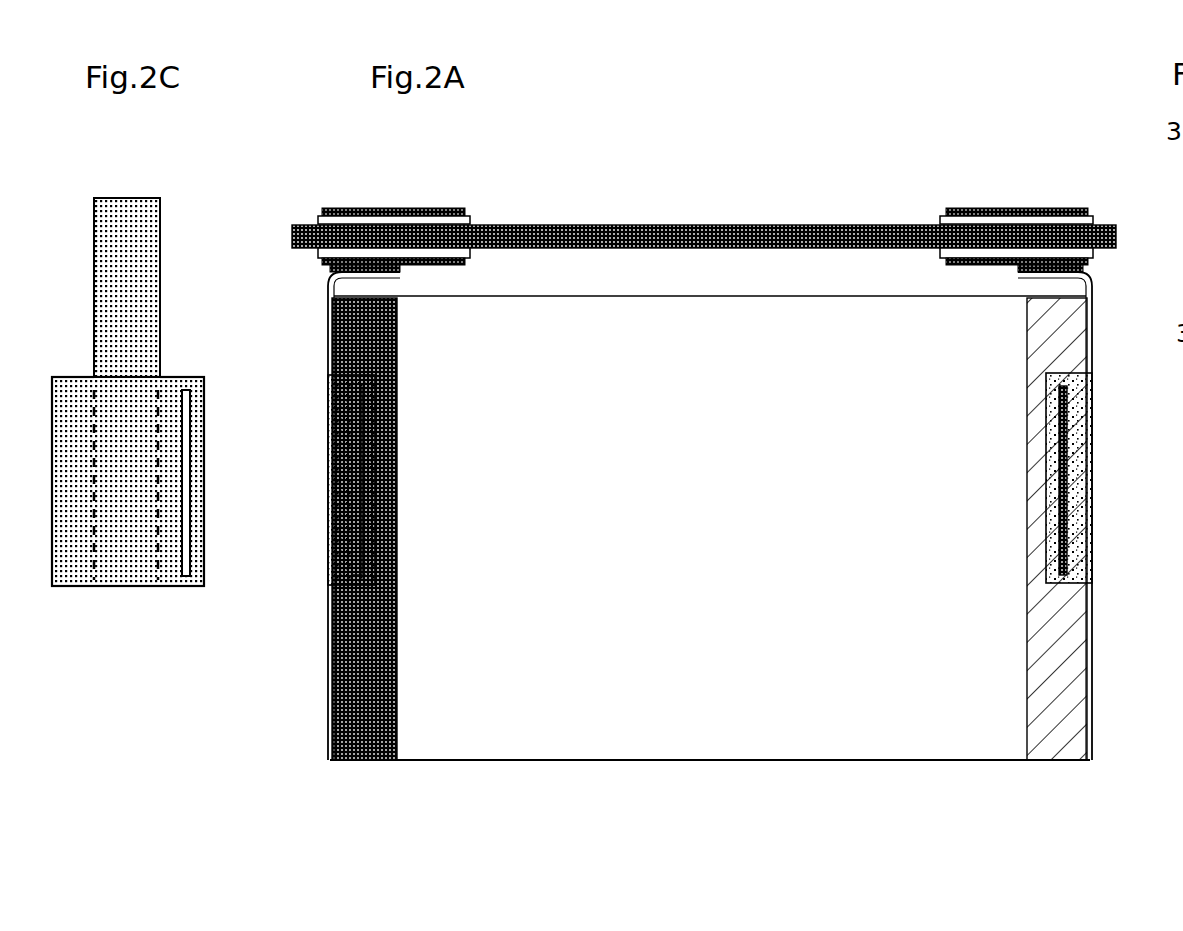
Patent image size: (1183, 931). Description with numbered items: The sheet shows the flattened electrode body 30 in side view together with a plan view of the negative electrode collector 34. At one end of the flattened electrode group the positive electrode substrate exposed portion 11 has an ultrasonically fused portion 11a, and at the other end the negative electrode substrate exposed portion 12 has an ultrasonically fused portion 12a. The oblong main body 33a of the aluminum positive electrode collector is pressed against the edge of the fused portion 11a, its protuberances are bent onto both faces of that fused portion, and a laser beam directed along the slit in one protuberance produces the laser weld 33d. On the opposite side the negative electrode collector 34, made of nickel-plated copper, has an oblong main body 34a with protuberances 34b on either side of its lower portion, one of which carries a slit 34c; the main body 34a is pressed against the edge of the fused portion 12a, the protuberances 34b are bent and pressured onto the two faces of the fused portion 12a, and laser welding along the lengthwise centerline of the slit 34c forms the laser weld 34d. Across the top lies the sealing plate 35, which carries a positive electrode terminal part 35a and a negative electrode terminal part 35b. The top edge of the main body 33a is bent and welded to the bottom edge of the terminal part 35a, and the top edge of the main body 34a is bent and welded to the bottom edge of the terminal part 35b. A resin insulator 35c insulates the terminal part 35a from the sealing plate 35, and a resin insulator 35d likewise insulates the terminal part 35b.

In FIG. 2A, the positive electrode substrate exposed portion 11 is at (1088, 688).
In FIG. 2A, the ultrasonically fused portion 11a is at (1102, 566).
In FIG. 2A, the negative electrode substrate exposed portion 12 is at (346, 688).
In FIG. 2A, the ultrasonically fused portion 12a is at (308, 566).
In FIG. 2A, the flattened electrode body 30 is at (707, 553).
In FIG. 2A, the main body 33a is at (1092, 314).
In FIG. 2A, the laser weld 33d is at (1068, 440).
In FIG. 2C, the negative electrode collector 34 is at (138, 389).
In FIG. 2C, the main body 34a is at (112, 332).
In FIG. 2A, the main body 34a is at (328, 318).
In FIG. 2C, the protuberances 34b is at (185, 590).
In FIG. 2C, the slit 34c is at (186, 403).
In FIG. 2A, the laser weld 34d is at (352, 480).
In FIG. 2A, the sealing plate 35 is at (673, 224).
In FIG. 2A, the positive electrode terminal part 35a is at (973, 224).
In FIG. 2A, the negative electrode terminal part 35b is at (381, 224).
In FIG. 2A, the resin insulator 35c is at (953, 254).
In FIG. 2A, the resin insulator 35d is at (456, 254).